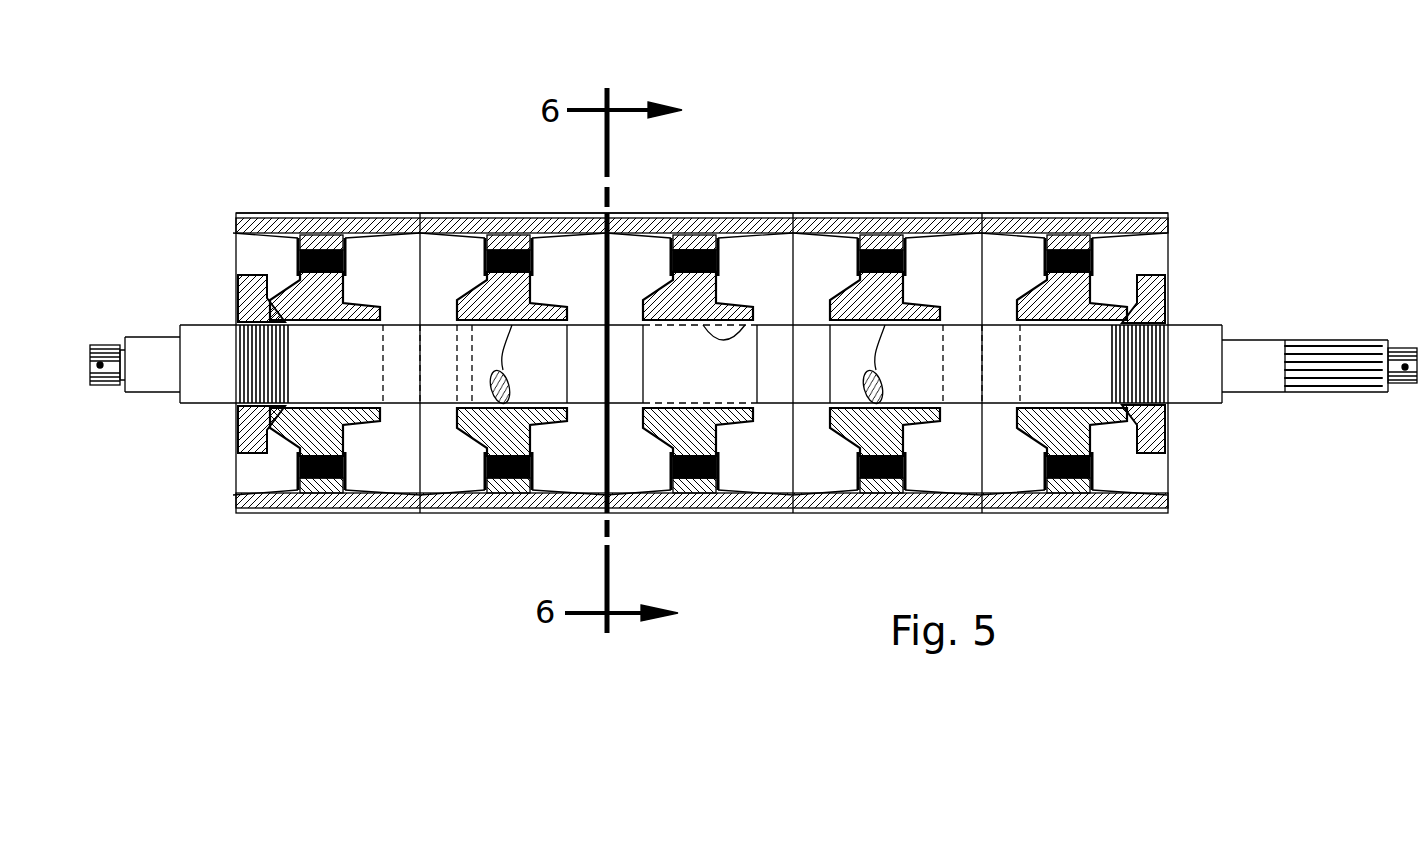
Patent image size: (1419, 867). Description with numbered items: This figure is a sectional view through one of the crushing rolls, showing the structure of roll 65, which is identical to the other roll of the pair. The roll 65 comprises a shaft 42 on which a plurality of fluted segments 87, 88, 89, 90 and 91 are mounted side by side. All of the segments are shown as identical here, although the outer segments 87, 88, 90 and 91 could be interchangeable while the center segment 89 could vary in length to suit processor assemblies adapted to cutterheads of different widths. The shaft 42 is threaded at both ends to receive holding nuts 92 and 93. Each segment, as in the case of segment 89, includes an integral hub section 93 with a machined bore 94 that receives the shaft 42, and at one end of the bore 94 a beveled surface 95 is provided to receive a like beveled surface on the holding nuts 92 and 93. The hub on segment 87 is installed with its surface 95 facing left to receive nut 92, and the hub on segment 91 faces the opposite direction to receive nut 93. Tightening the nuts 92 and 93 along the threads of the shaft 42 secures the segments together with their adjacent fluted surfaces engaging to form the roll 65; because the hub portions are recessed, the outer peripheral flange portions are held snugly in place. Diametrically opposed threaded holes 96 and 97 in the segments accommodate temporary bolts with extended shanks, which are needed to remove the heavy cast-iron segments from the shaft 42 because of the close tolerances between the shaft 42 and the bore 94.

The shaft 42 is at (1280, 333).
The roll 65 is at (847, 123).
The fluted segment 87 is at (337, 213).
The fluted segment 88 is at (493, 213).
The fluted segment 89 is at (733, 214).
The fluted segment 90 is at (873, 213).
The fluted segment 91 is at (1042, 220).
The holding nut 92 is at (238, 297).
The holding nut 93 is at (652, 298).
The machined bore 94 is at (742, 322).
The beveled surface 95 is at (650, 377).
The threaded hole 96 is at (700, 253).
The threaded hole 97 is at (699, 470).